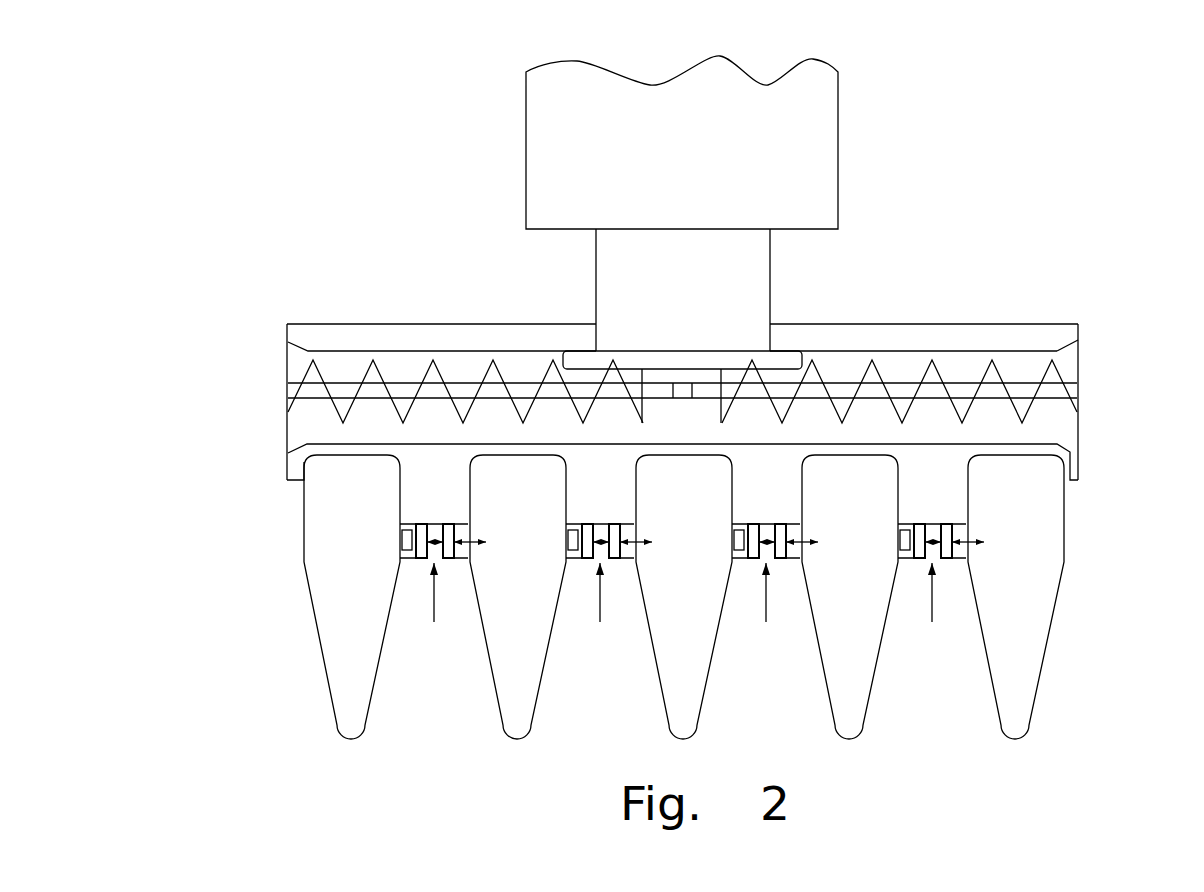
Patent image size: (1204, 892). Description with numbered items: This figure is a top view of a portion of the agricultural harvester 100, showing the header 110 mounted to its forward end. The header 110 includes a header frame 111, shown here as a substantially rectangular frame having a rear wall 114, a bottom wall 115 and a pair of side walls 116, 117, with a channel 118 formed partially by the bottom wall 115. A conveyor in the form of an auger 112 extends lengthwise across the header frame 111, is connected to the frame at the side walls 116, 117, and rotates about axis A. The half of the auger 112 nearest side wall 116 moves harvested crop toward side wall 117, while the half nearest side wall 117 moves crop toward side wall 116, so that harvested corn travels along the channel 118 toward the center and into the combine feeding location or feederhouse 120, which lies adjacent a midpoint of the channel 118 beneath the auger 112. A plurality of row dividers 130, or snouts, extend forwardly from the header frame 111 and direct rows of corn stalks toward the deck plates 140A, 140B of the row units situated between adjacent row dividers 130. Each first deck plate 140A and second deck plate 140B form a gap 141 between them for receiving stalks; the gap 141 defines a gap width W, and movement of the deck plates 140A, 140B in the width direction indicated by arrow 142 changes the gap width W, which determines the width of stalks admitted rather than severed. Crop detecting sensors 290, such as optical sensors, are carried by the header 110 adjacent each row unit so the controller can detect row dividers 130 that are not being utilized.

The agricultural harvester 100 is at (886, 120).
The header 110 is at (283, 702).
The header frame 111 is at (353, 323).
The conveyor (auger) 112 is at (452, 386).
The rear wall 114 is at (848, 324).
The bottom wall 115 is at (870, 415).
The side wall 116 is at (287, 356).
The side wall 117 is at (1080, 368).
The channel 118 is at (1068, 372).
The combine feeding location (feederhouse) 120 is at (683, 350).
The row divider 130 is at (370, 712).
The first deck plate 140A is at (414, 559).
The second deck plate 140B is at (455, 560).
The gap 141 is at (682, 608).
The width direction (arrow) 142 is at (460, 527).
The crop detecting sensor 290 is at (402, 540).
The gap width W is at (436, 530).
The axis A is at (285, 390).